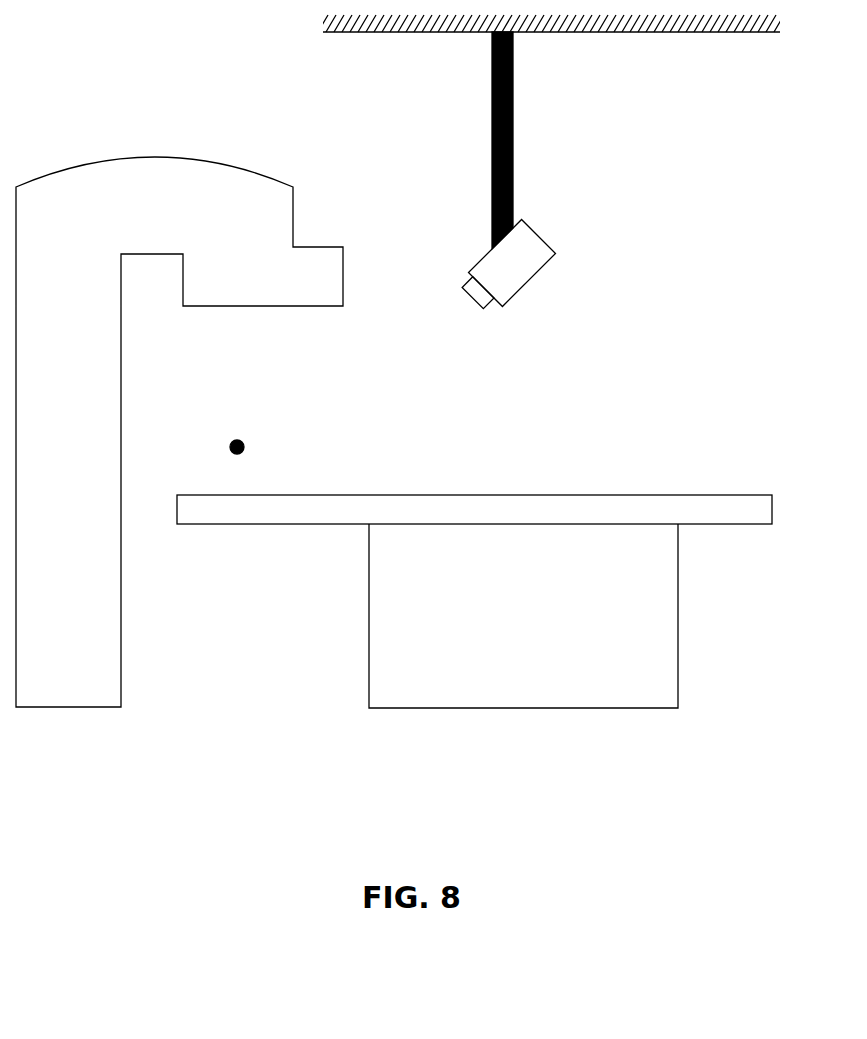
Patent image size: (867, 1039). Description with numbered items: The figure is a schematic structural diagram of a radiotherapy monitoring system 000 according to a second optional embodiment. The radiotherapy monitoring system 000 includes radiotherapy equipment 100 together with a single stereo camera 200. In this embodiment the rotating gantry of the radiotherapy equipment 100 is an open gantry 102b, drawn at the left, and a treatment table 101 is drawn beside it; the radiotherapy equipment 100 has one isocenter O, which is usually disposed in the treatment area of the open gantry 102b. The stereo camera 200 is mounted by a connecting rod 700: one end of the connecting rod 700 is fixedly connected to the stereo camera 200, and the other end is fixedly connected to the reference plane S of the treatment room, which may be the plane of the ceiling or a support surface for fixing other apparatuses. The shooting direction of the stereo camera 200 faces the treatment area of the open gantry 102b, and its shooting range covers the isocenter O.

The radiotherapy monitoring system 000 is at (64, 112).
The reference plane S is at (342, 32).
The connecting rod 700 is at (522, 126).
The stereo camera 200 is at (531, 263).
The isocenter O is at (240, 427).
The radiotherapy equipment 100 is at (394, 487).
The open gantry 102b is at (99, 666).
The treatment table 101 is at (474, 636).